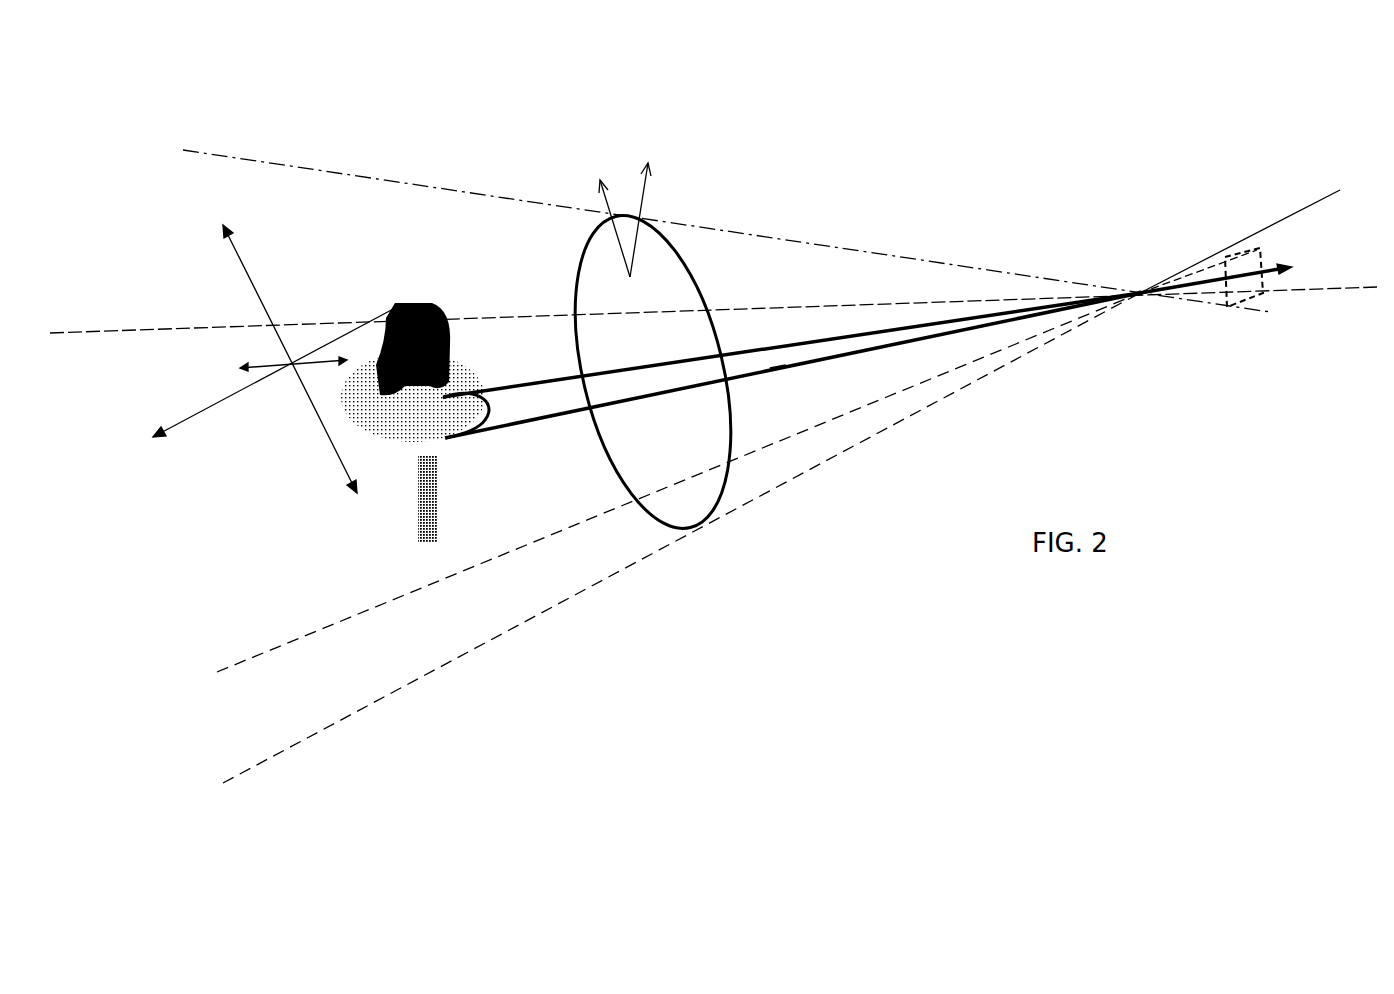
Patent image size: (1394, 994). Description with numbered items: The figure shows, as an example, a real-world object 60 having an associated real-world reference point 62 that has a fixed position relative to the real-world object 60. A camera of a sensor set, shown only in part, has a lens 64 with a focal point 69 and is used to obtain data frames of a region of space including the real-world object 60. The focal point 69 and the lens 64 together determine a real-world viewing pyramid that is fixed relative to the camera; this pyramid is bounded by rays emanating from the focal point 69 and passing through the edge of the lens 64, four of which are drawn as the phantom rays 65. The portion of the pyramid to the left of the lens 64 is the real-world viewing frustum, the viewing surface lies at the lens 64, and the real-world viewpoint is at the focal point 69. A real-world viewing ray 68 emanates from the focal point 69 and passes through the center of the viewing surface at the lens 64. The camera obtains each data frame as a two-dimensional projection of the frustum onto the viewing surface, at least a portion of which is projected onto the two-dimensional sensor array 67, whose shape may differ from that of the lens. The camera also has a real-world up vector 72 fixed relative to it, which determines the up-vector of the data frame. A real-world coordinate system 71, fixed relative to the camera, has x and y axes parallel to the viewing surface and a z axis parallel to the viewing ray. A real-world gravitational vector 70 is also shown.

The real-world object 60 is at (416, 305).
The real-world reference point 62 is at (440, 395).
The lens 64 is at (661, 222).
The phantom rays 65 is at (813, 250).
The 2D sensor array 67 is at (1240, 267).
The real-world viewing ray 68 is at (778, 368).
The focal point 69 is at (1142, 291).
The real-world gravitational vector 70 is at (656, 203).
The real-world coordinate system 71 is at (203, 270).
The real-world up vector 72 is at (625, 228).